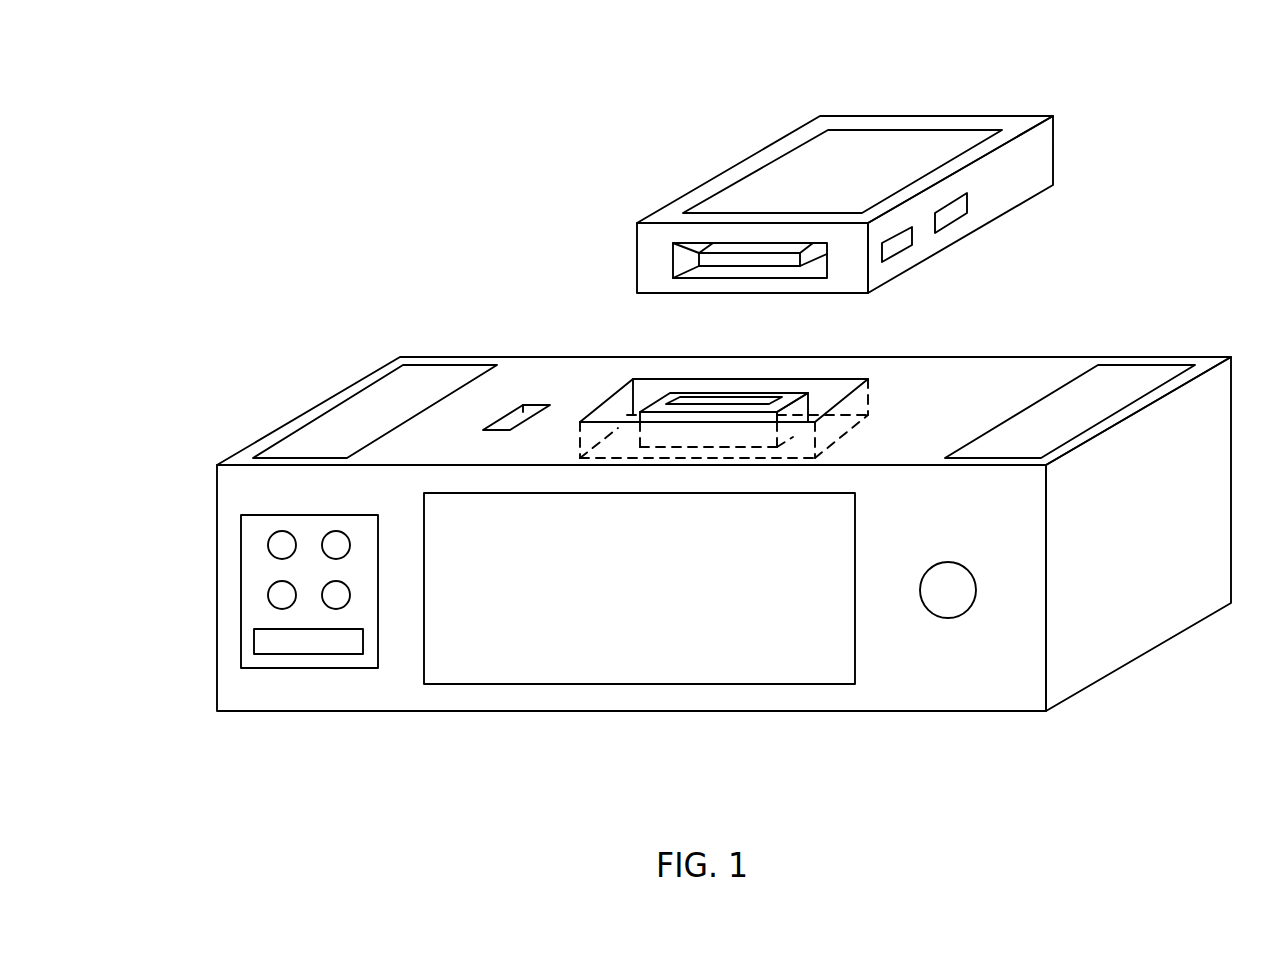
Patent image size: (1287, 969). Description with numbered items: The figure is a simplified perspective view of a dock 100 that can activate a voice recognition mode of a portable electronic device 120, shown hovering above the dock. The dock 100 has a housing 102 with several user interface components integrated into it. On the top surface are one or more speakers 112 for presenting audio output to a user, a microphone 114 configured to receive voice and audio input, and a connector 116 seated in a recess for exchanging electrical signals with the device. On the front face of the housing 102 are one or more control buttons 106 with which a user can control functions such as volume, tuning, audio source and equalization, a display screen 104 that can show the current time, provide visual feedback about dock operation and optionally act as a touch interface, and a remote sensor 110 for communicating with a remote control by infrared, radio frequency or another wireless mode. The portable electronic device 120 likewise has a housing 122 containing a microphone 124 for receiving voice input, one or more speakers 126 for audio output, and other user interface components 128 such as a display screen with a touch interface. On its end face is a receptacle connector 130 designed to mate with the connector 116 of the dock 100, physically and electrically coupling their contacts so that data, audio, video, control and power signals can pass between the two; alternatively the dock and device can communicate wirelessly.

The dock 100 is at (699, 532).
The housing 102 is at (1118, 639).
The display screen 104 is at (653, 627).
The control buttons 106 is at (263, 610).
The remote sensor 110 is at (951, 609).
The speakers 112 is at (427, 383).
The microphone 114 is at (522, 412).
The connector 116 is at (787, 398).
The portable electronic device 120 is at (840, 175).
The housing 122 is at (1018, 183).
The microphone 124 is at (902, 253).
The speakers 126 is at (960, 220).
The user interface components 128 is at (840, 145).
The receptacle connector 130 is at (683, 252).